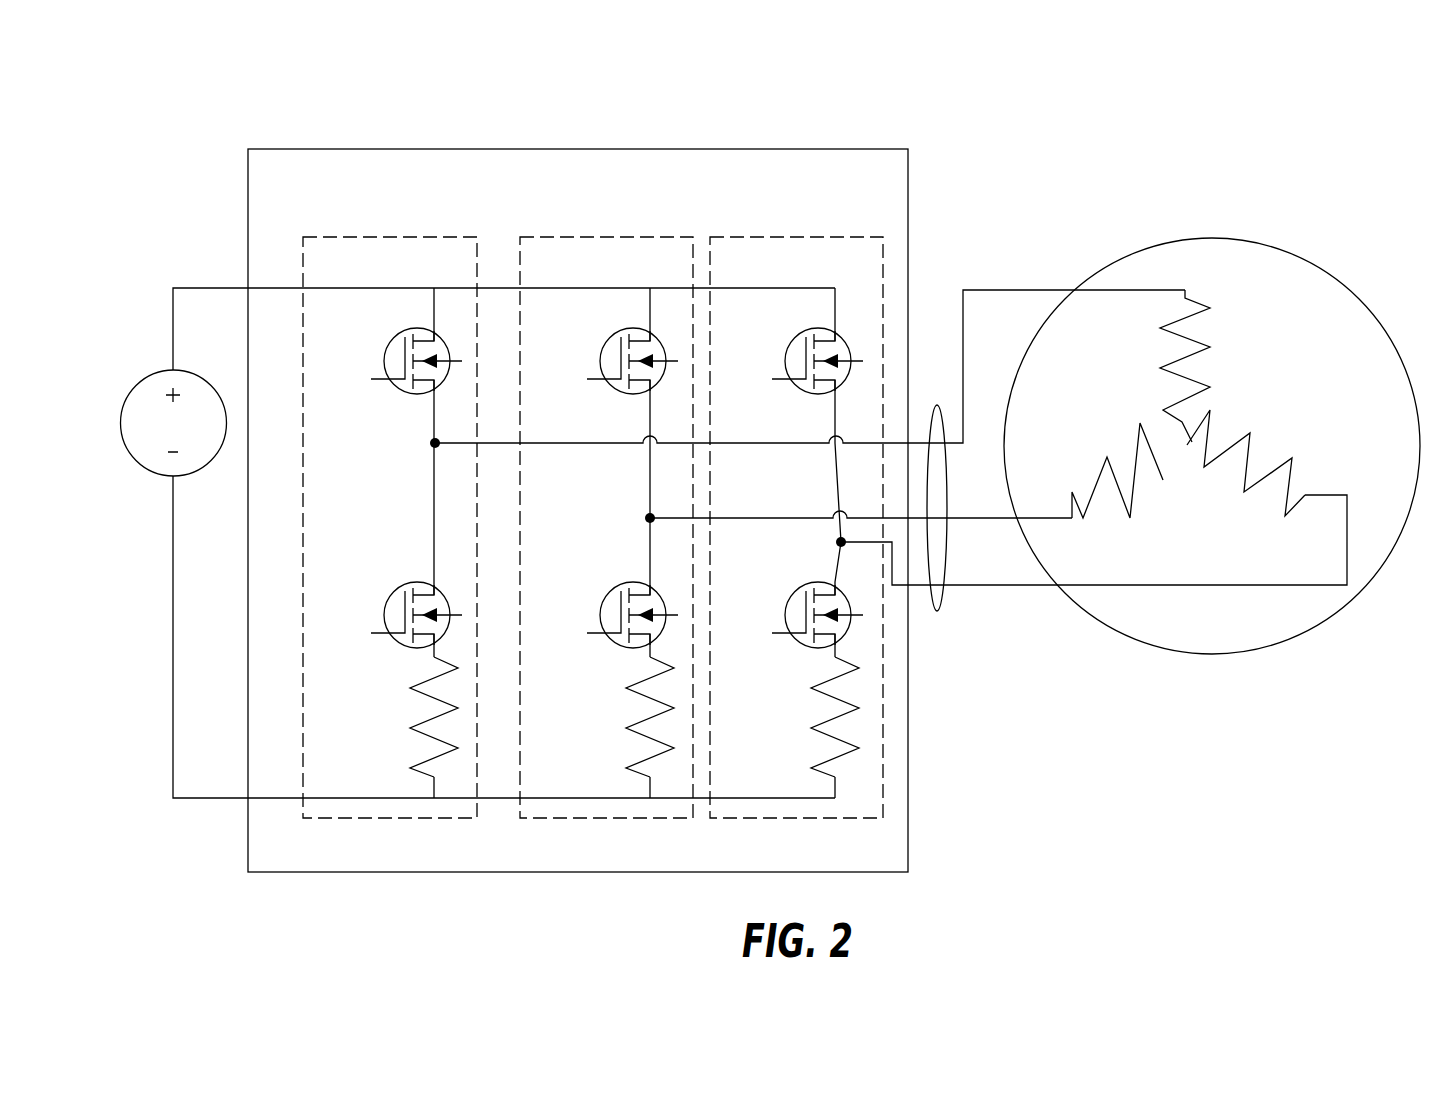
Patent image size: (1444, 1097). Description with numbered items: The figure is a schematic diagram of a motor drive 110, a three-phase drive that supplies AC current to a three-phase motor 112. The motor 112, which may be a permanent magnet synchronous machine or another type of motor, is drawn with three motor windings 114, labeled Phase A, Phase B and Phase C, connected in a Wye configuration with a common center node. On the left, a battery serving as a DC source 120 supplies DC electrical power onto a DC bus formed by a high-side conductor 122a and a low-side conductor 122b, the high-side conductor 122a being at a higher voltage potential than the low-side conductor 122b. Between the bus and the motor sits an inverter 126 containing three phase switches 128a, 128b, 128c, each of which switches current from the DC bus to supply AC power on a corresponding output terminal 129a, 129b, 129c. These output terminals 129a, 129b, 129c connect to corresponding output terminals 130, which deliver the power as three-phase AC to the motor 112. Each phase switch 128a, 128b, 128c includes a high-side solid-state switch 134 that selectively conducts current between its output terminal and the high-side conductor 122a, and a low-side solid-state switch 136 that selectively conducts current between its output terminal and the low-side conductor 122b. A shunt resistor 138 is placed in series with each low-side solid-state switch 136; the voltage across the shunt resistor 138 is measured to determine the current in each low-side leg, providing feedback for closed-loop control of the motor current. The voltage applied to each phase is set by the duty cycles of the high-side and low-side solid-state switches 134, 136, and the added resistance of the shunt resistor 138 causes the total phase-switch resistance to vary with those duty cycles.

The motor drive 110 is at (1130, 124).
The three-phase motor 112 is at (1217, 238).
The motor windings 114 is at (1210, 350).
The direct current (DC) source 120 is at (137, 383).
The high-side conductor 122a is at (190, 288).
The low-side conductor 122b is at (213, 798).
The inverter 126 is at (330, 149).
The phase switch 128a is at (400, 237).
The phase switch 128b is at (620, 237).
The phase switch 128c is at (786, 237).
The output terminal 129a is at (431, 441).
The output terminal 129b is at (647, 516).
The output terminal 129c is at (838, 540).
The output terminals 130 is at (937, 405).
The high-side solid-state switch 134 is at (384, 366).
The low-side solid-state switch 136 is at (384, 604).
The shunt resistor 138 is at (410, 727).